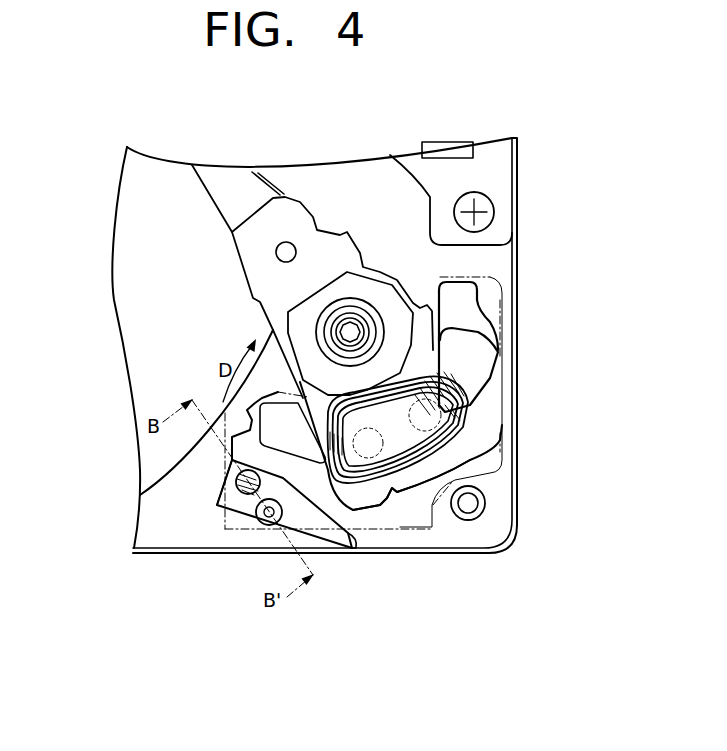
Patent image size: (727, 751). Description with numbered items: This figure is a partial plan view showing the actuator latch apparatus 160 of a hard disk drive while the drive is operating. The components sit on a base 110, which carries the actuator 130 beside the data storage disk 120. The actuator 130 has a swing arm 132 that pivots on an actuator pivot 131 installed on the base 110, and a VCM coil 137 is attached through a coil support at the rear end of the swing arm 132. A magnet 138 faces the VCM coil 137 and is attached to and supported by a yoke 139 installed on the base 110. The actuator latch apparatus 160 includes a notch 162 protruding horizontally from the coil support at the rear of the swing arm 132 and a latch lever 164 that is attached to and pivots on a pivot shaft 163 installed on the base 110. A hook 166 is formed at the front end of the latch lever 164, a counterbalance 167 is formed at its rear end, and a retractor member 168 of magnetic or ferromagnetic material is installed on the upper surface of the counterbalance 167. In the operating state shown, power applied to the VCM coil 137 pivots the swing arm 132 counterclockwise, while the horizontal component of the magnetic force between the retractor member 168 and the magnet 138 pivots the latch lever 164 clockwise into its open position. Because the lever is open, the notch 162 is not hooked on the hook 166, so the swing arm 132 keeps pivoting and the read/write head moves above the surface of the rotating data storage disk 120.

The base 110 is at (152, 524).
The data storage disk 120 is at (152, 312).
The actuator 130 is at (316, 201).
The actuator pivot 131 is at (350, 332).
The swing arm 132 is at (288, 210).
The VCM coil 137 is at (462, 407).
The magnet 138 is at (480, 368).
The yoke 139 is at (512, 299).
The actuator latch apparatus 160 is at (331, 563).
The notch 162 is at (387, 500).
The pivot shaft 163 is at (263, 518).
The latch lever 164 is at (266, 532).
The hook 166 is at (351, 540).
The counterbalance 167 is at (240, 507).
The retractor member 168 is at (241, 491).